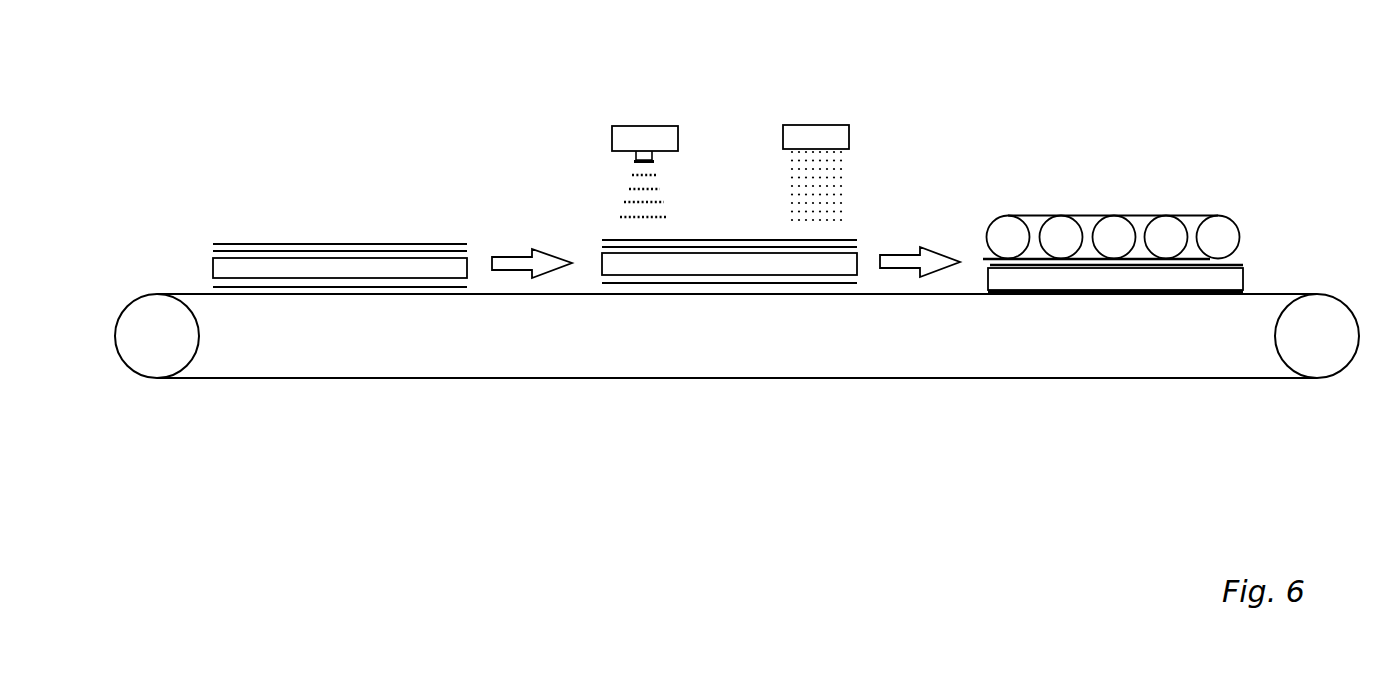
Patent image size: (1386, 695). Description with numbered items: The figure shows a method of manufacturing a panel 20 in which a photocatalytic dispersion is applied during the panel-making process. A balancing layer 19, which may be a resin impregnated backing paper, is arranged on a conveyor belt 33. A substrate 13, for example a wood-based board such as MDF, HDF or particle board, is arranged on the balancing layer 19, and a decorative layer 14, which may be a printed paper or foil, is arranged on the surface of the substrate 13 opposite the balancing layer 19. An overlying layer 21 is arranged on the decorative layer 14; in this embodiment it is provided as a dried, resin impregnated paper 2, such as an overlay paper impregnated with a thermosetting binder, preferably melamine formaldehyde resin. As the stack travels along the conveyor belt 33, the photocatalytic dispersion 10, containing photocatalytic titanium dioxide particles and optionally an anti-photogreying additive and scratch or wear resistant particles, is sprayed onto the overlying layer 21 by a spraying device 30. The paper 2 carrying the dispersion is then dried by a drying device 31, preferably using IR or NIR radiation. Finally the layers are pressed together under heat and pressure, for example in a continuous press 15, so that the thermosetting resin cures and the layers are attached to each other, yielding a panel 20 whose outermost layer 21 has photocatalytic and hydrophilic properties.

The impregnated paper 2 is at (360, 245).
The photocatalytic dispersion 10 is at (614, 194).
The substrate 13 is at (213, 268).
The decorative layer 14 is at (213, 249).
The continuous press 15 is at (1170, 197).
The balancing layer 19 is at (303, 288).
The panel 20 is at (1256, 276).
The overlying layer 21 is at (443, 245).
The spraying device 30 is at (640, 125).
The drying device 31 is at (808, 125).
The conveyor belt 33 is at (458, 378).